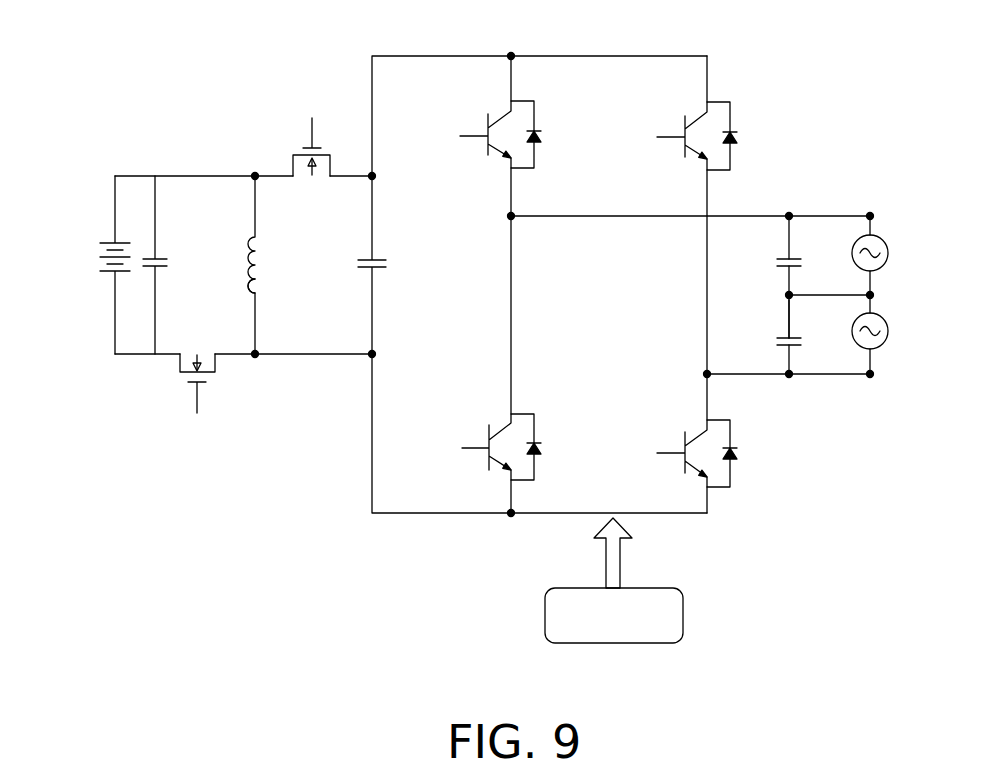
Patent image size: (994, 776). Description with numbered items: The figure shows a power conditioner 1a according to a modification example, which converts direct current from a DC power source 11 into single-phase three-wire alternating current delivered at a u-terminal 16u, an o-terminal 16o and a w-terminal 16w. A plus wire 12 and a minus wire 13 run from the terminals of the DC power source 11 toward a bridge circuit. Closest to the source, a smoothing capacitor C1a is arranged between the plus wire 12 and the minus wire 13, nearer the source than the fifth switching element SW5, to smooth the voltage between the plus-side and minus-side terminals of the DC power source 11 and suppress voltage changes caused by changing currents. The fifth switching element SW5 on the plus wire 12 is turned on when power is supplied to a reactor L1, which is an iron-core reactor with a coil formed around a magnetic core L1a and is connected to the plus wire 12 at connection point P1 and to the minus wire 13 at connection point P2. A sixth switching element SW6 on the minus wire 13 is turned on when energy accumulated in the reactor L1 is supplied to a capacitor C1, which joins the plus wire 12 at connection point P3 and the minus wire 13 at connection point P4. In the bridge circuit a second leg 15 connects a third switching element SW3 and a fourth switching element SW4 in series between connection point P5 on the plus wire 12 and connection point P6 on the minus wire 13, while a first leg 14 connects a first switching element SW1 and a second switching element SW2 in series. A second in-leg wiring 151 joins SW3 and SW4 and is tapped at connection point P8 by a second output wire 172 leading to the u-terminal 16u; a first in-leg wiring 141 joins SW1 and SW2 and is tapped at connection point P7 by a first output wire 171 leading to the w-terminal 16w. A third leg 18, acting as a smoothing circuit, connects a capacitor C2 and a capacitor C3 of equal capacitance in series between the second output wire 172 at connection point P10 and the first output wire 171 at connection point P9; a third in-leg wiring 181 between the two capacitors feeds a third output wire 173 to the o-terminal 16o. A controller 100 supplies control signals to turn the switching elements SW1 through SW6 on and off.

The power conditioner 1a is at (91, 79).
The DC power source 11 is at (110, 239).
The plus wire 12 is at (125, 356).
The minus wire 13 is at (190, 176).
The first leg 14 is at (709, 76).
The second leg 15 is at (509, 86).
The second in-leg wiring 151 is at (509, 257).
The first in-leg wiring 141 is at (706, 268).
The third leg 18 is at (787, 371).
The third in-leg wiring 181 is at (791, 321).
The first output wire 171 is at (808, 374).
The second output wire 172 is at (844, 214).
The third output wire 173 is at (812, 295).
The u-terminal 16u is at (872, 214).
The o-terminal 16o is at (874, 295).
The w-terminal 16w is at (873, 376).
The controller 100 is at (684, 614).
The capacitor C1 is at (368, 262).
The smoothing capacitor C1a is at (160, 258).
The capacitor C2 is at (785, 265).
The capacitor C3 is at (785, 340).
The reactor L1 is at (250, 238).
The magnetic core L1a is at (241, 290).
The first switching element SW1 is at (733, 488).
The second switching element SW2 is at (731, 104).
The third switching element SW3 is at (535, 414).
The fourth switching element SW4 is at (535, 104).
The fifth switching element SW5 is at (190, 382).
The sixth switching element SW6 is at (306, 148).
The connection point P1 is at (258, 357).
The connection point P2 is at (253, 174).
The connection point P3 is at (374, 354).
The connection point P4 is at (374, 176).
The connection point P5 is at (513, 516).
The connection point P6 is at (513, 54).
The connection point P7 is at (705, 373).
The connection point P8 is at (509, 215).
The connection point P9 is at (791, 377).
The connection point P10 is at (790, 214).